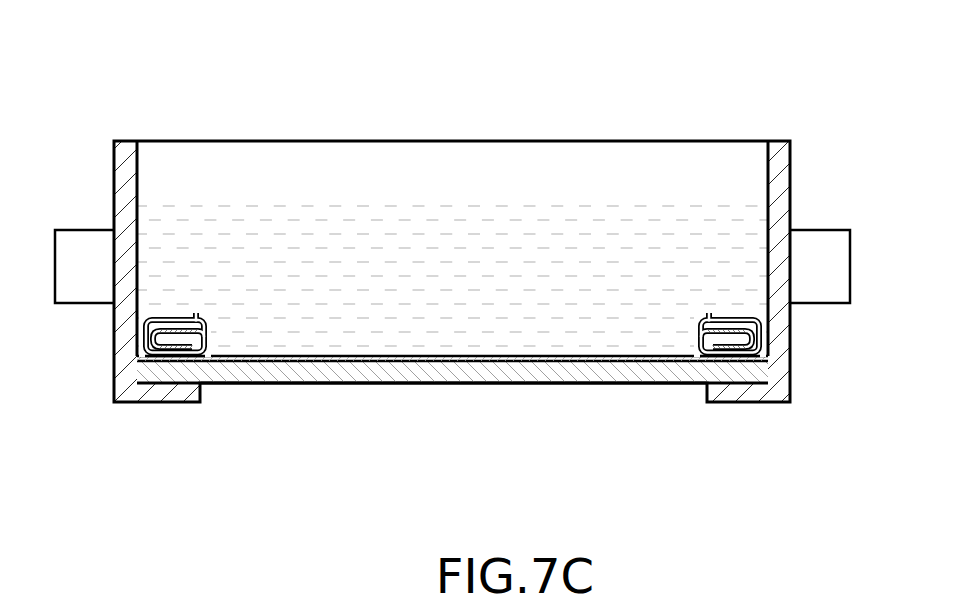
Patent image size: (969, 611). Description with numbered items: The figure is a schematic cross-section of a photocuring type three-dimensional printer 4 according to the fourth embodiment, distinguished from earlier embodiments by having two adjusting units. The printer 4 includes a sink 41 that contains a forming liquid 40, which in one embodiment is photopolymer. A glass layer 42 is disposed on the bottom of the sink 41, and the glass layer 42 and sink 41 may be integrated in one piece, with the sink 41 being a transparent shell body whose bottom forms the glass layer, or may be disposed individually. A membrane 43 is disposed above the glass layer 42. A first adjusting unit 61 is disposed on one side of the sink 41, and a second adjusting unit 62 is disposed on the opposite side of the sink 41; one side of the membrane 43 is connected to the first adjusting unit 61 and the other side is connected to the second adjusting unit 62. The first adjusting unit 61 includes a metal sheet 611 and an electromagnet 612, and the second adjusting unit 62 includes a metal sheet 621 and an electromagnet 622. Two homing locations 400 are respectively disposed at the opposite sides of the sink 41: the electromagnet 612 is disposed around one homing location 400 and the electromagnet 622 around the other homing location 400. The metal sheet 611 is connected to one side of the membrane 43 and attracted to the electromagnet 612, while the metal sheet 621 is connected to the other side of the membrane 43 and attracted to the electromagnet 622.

The 3D printer 4 is at (436, 22).
The forming liquid 40 is at (552, 232).
The sink 41 is at (780, 343).
The glass layer 42 is at (398, 373).
The membrane 43 is at (532, 358).
The first adjusting unit 61 is at (192, 83).
The metal sheet 611 is at (169, 330).
The electromagnet 612 is at (74, 258).
The second adjusting unit 62 is at (714, 83).
The metal sheet 621 is at (736, 330).
The electromagnet 622 is at (835, 258).
The homing location 400 is at (170, 362).